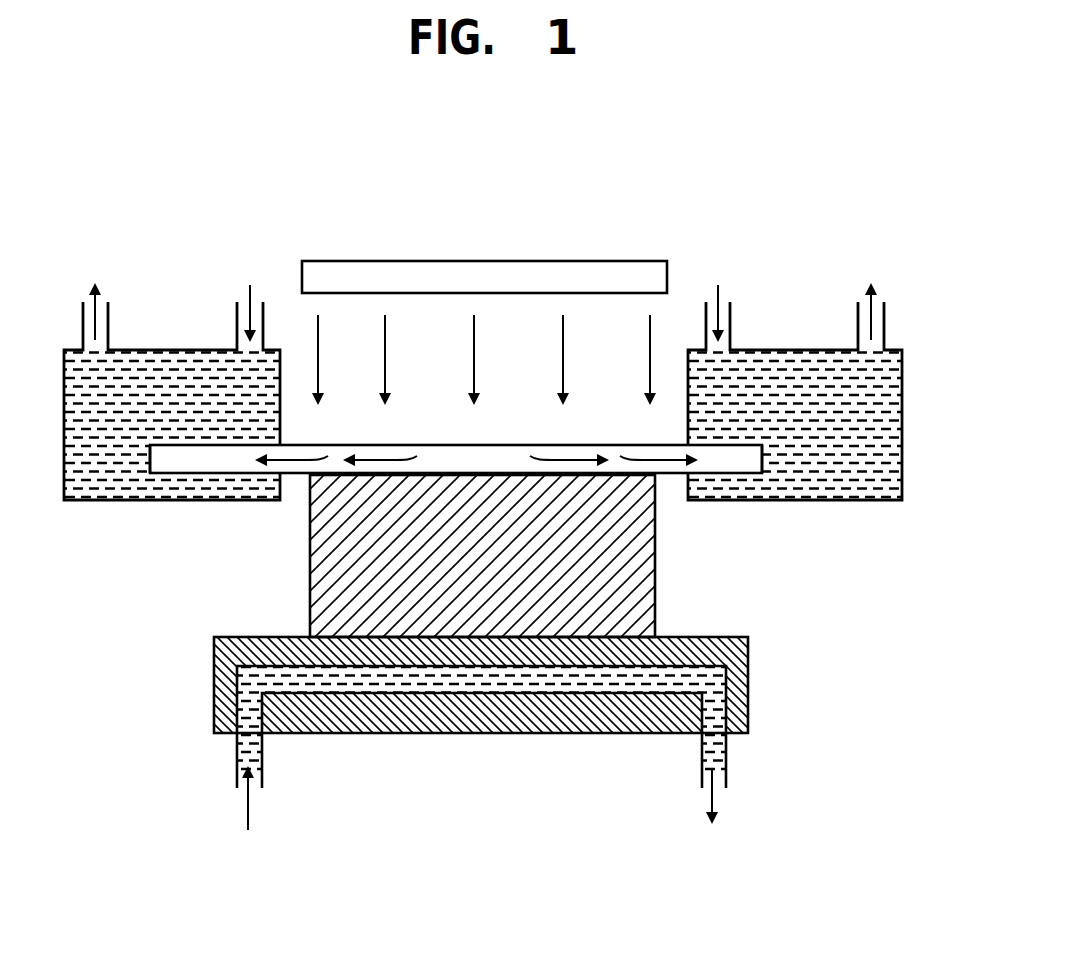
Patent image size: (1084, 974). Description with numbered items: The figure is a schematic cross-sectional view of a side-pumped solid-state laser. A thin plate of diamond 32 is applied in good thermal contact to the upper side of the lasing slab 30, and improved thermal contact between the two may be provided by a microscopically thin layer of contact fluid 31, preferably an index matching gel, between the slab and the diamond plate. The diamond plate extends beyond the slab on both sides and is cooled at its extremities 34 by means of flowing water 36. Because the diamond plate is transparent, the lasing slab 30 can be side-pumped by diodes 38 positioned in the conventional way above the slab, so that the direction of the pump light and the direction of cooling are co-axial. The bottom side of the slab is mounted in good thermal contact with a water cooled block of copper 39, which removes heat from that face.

The lasing slab 30 is at (655, 600).
The contact fluid 31 is at (434, 478).
The thin plate of diamond 32 is at (614, 450).
The extremities of the diamond plate 34 is at (201, 460).
The flowing water 36 is at (888, 442).
The diodes 38 is at (459, 272).
The water cooled block of copper 39 is at (748, 670).